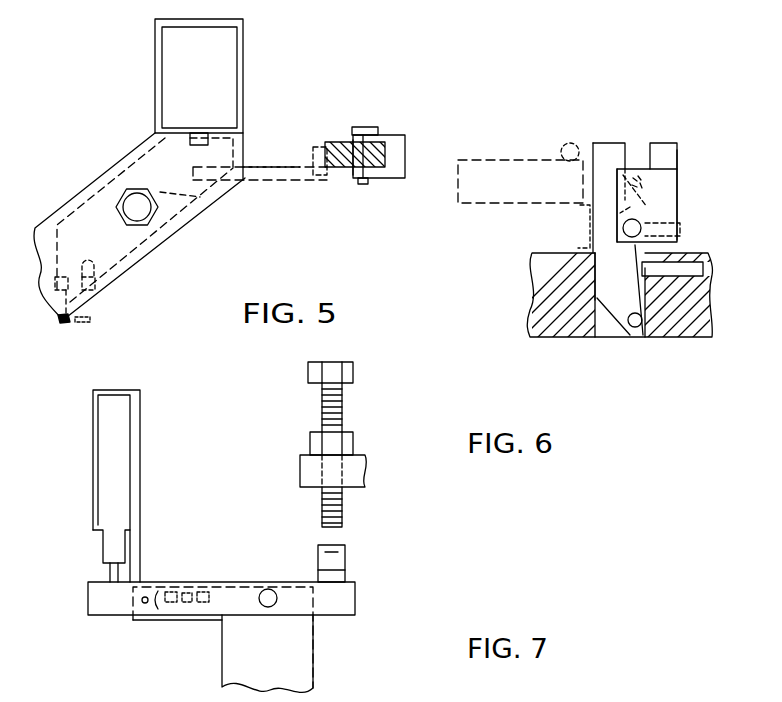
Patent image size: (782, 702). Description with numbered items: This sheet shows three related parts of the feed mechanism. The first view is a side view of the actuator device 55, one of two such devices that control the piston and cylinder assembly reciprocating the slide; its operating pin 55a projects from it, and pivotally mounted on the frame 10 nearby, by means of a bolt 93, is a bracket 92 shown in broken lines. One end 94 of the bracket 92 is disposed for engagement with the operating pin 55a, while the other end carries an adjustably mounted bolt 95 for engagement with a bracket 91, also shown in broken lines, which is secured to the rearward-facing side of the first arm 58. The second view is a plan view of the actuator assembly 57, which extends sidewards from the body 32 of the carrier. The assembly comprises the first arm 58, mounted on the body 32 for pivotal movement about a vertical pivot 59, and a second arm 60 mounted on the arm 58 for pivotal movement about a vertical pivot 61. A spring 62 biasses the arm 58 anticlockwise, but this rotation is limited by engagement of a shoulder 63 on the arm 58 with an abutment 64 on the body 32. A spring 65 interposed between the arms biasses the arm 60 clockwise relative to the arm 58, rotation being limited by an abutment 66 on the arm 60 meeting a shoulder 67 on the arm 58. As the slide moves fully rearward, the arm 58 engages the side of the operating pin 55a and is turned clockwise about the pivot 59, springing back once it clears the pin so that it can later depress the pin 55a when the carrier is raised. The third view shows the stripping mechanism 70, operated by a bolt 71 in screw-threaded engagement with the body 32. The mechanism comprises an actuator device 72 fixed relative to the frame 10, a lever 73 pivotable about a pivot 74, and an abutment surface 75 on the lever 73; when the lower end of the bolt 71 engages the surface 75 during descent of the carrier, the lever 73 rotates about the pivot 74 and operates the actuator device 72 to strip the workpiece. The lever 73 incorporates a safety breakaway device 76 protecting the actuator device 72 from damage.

In FIG. 5, the frame 10 is at (93, 183).
In FIG. 6, the body 32 is at (688, 327).
In FIG. 7, the body 32 is at (348, 468).
In FIG. 5, the actuator device 55 is at (215, 62).
In FIG. 5, the operating pin 55a is at (212, 130).
In FIG. 6, the operating pin 55a is at (562, 144).
In FIG. 5, the actuator assembly 57 is at (406, 182).
In FIG. 6, the actuator assembly 57 is at (630, 141).
In FIG. 5, the first arm 58 is at (332, 143).
In FIG. 6, the first arm 58 is at (603, 162).
In FIG. 6, the vertical pivot 59 is at (635, 327).
In FIG. 6, the second arm 60 is at (668, 157).
In FIG. 5, the vertical pivot 61 is at (363, 127).
In FIG. 6, the vertical pivot 61 is at (641, 225).
In FIG. 6, the spring 62 is at (705, 270).
In FIG. 6, the shoulder 63 is at (605, 297).
In FIG. 6, the abutment 64 is at (598, 268).
In FIG. 6, the spring 65 is at (658, 172).
In FIG. 5, the abutment 66 is at (378, 172).
In FIG. 6, the abutment 66 is at (680, 230).
In FIG. 6, the shoulder 67 is at (640, 208).
In FIG. 7, the stripping mechanism 70 is at (218, 632).
In FIG. 7, the bolt 71 is at (343, 503).
In FIG. 7, the actuator device 72 is at (112, 453).
In FIG. 7, the lever 73 is at (190, 590).
In FIG. 7, the pivot 74 is at (270, 588).
In FIG. 7, the abutment surface 75 is at (347, 557).
In FIG. 7, the safety breakaway device 76 is at (155, 622).
In FIG. 5, the bracket 91 is at (305, 181).
In FIG. 6, the bracket 91 is at (495, 187).
In FIG. 5, the bracket 92 is at (198, 196).
In FIG. 5, the bolt 93 is at (160, 218).
In FIG. 5, the end 94 is at (271, 156).
In FIG. 5, the bolt 95 is at (97, 297).